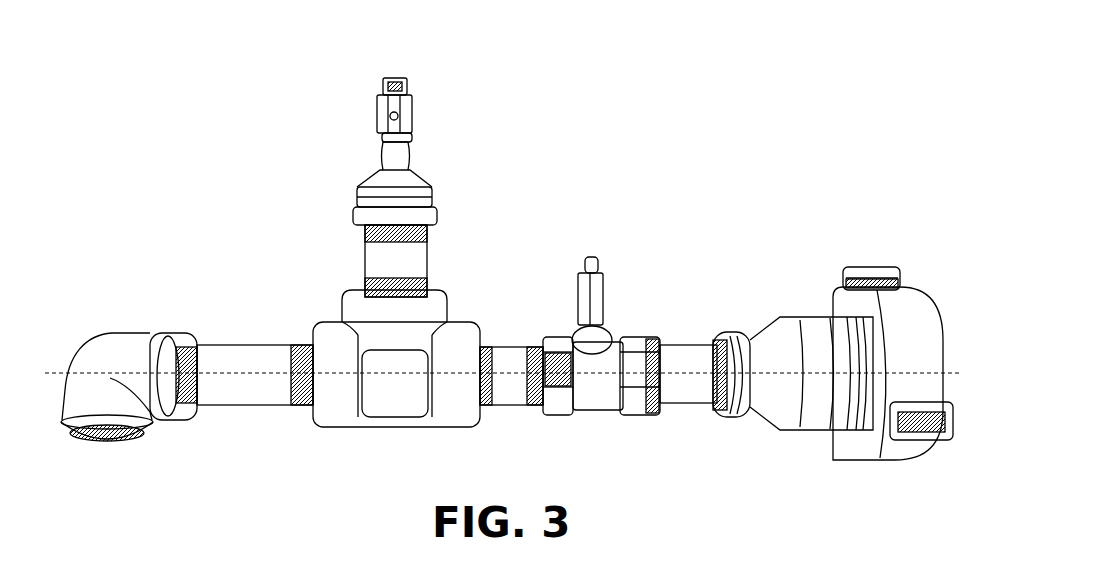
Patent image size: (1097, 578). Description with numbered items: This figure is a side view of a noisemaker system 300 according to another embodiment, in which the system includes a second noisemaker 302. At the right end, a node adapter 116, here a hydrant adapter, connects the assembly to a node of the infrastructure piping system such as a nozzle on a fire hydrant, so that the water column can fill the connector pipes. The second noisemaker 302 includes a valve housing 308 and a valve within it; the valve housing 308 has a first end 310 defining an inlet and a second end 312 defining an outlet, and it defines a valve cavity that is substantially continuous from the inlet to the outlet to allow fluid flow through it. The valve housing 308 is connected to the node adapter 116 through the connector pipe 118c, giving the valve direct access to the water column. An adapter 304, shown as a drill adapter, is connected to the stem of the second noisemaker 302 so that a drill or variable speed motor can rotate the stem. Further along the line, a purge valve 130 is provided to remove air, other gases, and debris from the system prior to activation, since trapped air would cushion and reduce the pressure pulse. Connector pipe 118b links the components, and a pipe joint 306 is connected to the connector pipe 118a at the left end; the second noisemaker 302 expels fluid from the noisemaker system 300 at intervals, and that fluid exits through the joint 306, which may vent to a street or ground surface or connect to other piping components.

The noisemaker system 300 is at (252, 130).
The purge valve 130 is at (410, 108).
The second noisemaker 302 is at (549, 322).
The adapter 304 is at (597, 297).
The pipe joint 306 is at (120, 357).
The valve housing 308 is at (542, 360).
The first end 310 is at (663, 410).
The second end 312 is at (550, 407).
The node adapter 116 is at (803, 340).
The connector pipe 118a is at (248, 355).
The connector pipe 118b is at (513, 410).
The connector pipe 118c is at (687, 357).